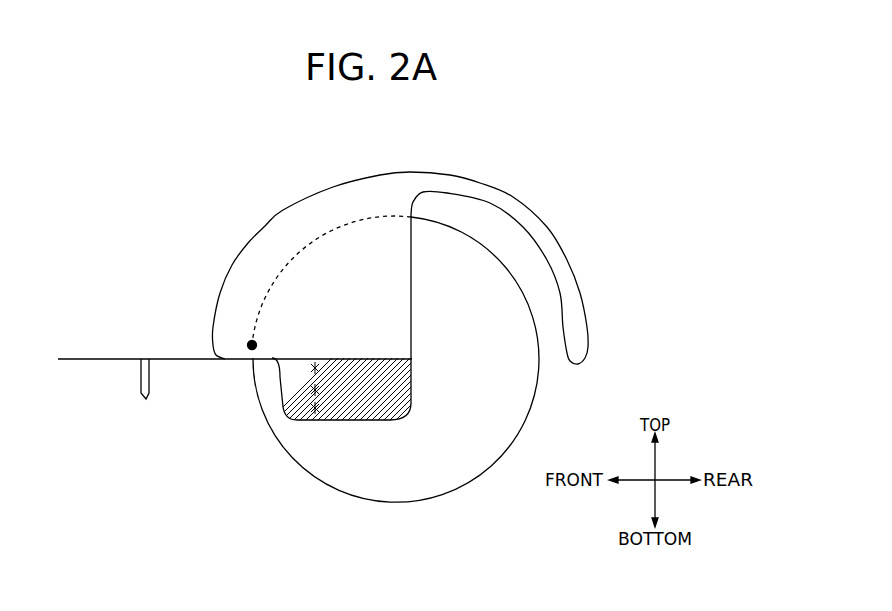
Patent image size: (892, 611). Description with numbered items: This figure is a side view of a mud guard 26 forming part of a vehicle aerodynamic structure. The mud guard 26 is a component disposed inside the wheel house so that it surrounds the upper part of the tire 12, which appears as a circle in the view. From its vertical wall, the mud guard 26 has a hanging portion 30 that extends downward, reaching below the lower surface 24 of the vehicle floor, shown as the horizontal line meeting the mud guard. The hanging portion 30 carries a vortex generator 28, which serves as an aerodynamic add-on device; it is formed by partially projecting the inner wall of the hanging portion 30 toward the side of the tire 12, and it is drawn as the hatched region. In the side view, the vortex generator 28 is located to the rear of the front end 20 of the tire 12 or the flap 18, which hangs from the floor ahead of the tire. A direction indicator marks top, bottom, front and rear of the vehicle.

The tire 12 is at (462, 490).
The flap 18 is at (147, 400).
The front end 20 is at (252, 347).
The lower surface 24 is at (73, 362).
The mud guard 26 is at (280, 213).
The vortex generator 28 is at (325, 420).
The hanging portion 30 is at (387, 420).